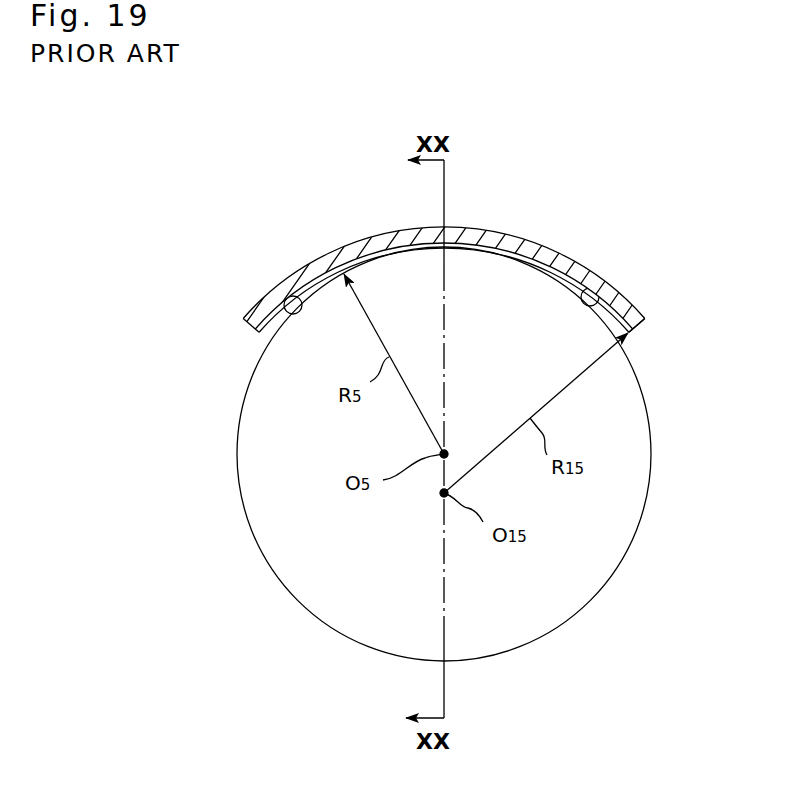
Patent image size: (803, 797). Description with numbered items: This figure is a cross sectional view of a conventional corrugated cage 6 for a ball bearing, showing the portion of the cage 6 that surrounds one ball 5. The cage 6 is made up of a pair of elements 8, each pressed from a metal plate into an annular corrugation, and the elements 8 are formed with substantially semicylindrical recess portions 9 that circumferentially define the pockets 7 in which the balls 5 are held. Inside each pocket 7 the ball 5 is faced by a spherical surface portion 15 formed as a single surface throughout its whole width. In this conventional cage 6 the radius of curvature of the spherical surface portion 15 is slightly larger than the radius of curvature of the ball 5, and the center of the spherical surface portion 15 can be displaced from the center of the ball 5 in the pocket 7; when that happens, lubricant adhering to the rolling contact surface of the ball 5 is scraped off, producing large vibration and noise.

The ball 5 is at (563, 593).
The cage 6 is at (646, 305).
The pocket 7 is at (296, 312).
The element 8 is at (360, 240).
The recess portion 9 is at (598, 290).
The spherical surface portion 15 is at (505, 247).